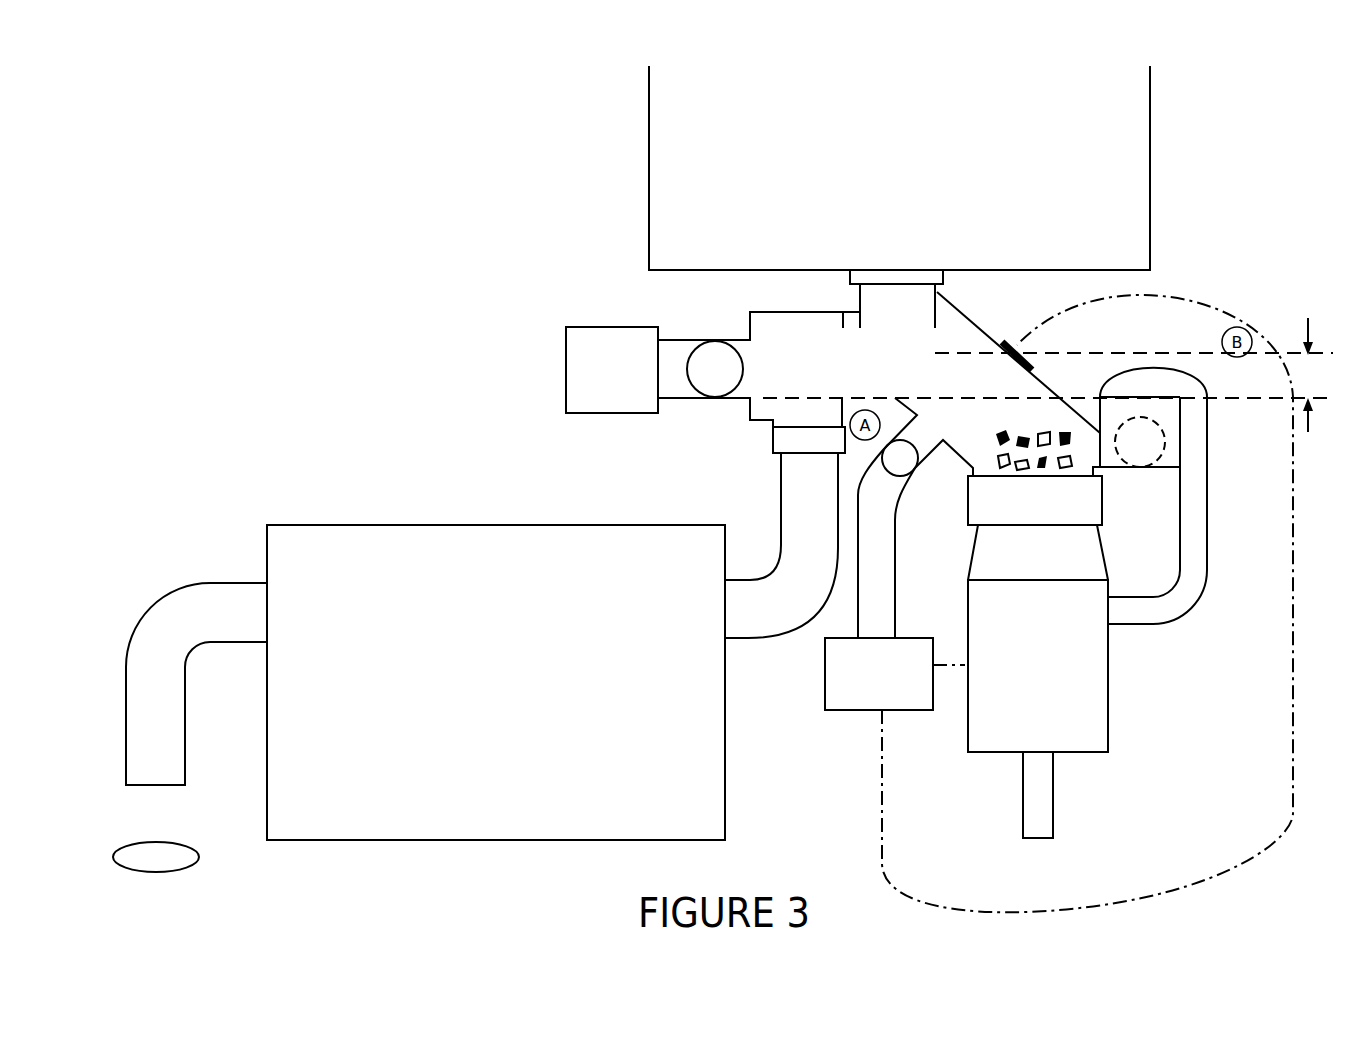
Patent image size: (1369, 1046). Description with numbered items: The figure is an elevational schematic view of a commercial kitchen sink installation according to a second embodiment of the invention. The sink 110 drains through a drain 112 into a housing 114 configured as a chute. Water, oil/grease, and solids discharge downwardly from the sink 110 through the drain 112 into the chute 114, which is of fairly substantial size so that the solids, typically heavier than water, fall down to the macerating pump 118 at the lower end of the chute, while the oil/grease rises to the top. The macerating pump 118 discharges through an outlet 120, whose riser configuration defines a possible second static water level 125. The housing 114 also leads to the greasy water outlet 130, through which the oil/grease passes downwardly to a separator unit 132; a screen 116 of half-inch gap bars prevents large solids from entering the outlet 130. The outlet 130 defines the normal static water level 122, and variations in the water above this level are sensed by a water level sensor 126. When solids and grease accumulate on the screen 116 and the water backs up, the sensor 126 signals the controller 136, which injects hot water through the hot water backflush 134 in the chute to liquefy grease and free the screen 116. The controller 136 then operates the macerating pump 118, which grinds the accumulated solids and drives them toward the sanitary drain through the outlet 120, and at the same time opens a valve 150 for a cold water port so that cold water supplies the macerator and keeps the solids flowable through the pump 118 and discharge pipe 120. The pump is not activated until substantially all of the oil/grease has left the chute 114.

The sink 110 is at (649, 168).
The drain 112 is at (850, 270).
The housing 114 is at (957, 455).
The screen 116 is at (842, 311).
The macerating pump 118 is at (1095, 693).
The outlet 120 is at (1195, 538).
The normal static water level 122 is at (1313, 417).
The second static water level 125 is at (1315, 332).
The water level sensor 126 is at (1015, 360).
The greasy water outlet 130 is at (780, 495).
The separator unit 132 is at (525, 698).
The hot water backflush 134 is at (905, 462).
The controller 136 is at (902, 688).
The valve 150 is at (637, 387).